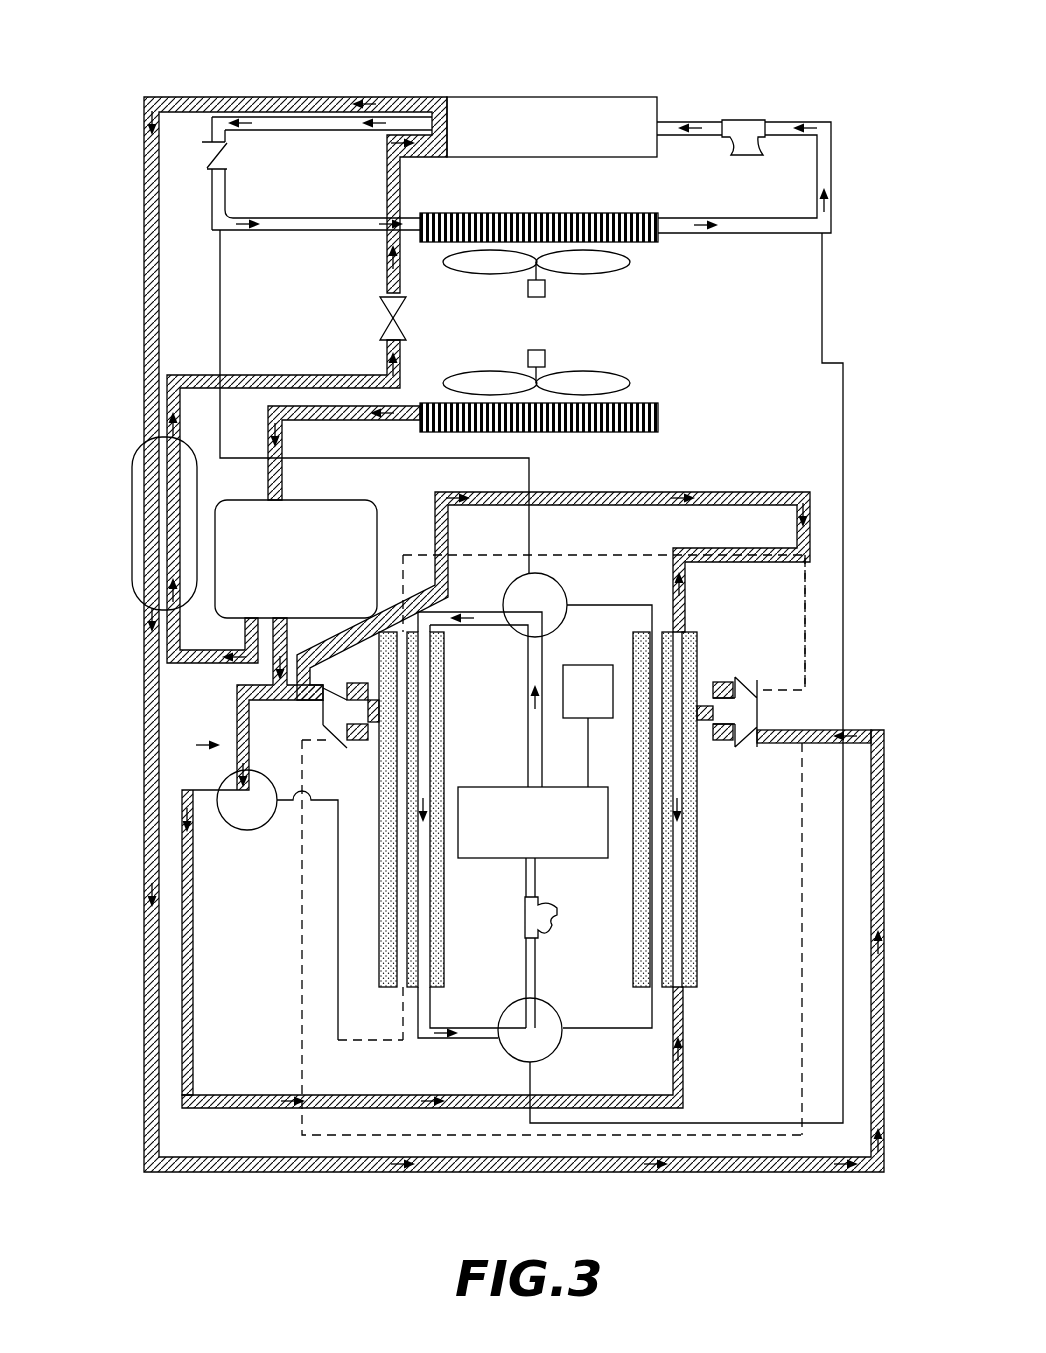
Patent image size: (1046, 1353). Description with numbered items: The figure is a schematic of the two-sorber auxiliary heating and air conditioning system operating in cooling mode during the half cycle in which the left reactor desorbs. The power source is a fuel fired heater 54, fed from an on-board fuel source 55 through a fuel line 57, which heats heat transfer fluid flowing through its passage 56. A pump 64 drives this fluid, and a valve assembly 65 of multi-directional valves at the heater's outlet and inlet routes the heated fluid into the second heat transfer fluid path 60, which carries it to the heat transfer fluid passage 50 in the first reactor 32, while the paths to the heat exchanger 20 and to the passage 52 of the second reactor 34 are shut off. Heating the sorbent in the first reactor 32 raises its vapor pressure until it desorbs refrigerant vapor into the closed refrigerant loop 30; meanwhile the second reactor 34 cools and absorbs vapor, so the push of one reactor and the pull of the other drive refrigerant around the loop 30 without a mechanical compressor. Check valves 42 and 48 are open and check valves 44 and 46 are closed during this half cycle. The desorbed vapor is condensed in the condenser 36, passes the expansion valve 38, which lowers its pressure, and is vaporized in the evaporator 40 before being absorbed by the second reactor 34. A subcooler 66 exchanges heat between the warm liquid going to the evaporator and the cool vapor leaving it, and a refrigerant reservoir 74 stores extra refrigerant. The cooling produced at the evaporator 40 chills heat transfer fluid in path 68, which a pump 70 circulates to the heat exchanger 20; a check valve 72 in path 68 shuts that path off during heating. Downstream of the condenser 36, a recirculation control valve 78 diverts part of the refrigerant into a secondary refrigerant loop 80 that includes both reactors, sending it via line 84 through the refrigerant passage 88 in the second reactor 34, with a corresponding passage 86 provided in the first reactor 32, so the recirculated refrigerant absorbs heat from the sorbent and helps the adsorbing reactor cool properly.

The heat exchanger 20 is at (645, 205).
The closed refrigerant loop 30 is at (823, 395).
The first reactor 32 is at (183, 1098).
The second reactor 34 is at (700, 963).
The condenser 36 is at (652, 382).
The expansion valve 38 is at (385, 307).
The evaporator 40 is at (483, 97).
The check valve 42 is at (177, 655).
The check valve 44 is at (323, 735).
The check valve 46 is at (755, 685).
The check valve 48 is at (757, 738).
The heat transfer fluid passage 50 is at (440, 987).
The heat transfer fluid passage 52 is at (657, 957).
The fuel fired heater 54 is at (588, 855).
The fuel source 55 is at (592, 662).
The heat transfer fluid passage 56 is at (535, 732).
The fuel line 57 is at (590, 757).
The second heat transfer fluid path 60 is at (492, 606).
The pump 64 is at (542, 938).
The valve assembly 65 is at (558, 582).
The subcooler 66 is at (138, 473).
The path 68 is at (312, 125).
The pump 70 is at (735, 120).
The check valve 72 is at (210, 147).
The refrigerant reservoir 74 is at (227, 558).
The recirculation control valve 78 is at (237, 822).
The secondary refrigerant loop 80 is at (200, 745).
The line 84 is at (182, 973).
The refrigerant passage 86 is at (386, 925).
The refrigerant passage 88 is at (680, 883).